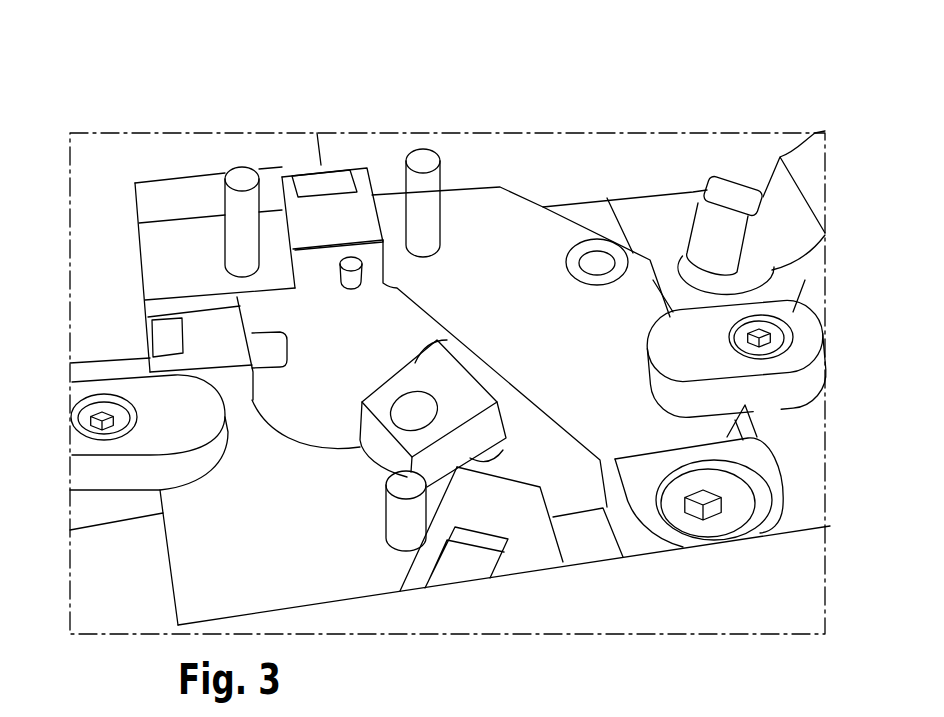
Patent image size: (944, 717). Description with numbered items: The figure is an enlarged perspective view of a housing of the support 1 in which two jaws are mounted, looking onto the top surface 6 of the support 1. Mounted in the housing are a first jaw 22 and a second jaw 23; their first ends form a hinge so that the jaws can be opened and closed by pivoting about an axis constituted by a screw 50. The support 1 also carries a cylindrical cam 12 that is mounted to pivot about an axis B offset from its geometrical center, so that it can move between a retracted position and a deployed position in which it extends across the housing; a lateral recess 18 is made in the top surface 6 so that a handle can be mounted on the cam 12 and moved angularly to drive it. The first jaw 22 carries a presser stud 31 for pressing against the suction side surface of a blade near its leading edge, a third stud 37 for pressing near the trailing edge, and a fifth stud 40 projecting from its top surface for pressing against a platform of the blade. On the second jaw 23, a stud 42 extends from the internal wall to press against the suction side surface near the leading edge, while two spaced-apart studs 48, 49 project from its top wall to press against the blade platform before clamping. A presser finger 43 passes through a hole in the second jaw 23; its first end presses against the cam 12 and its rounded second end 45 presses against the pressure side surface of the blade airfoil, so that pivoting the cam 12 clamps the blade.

The support 1 is at (628, 603).
The top surface 6 is at (95, 260).
The cam 12 is at (777, 267).
The lateral recess 18 is at (532, 172).
The first jaw 22 is at (293, 568).
The second jaw 23 is at (483, 225).
The presser stud 31 is at (272, 347).
The third stud 37 is at (510, 472).
The fifth stud 40 is at (407, 518).
The stud 42 is at (348, 267).
The presser finger 43 is at (457, 397).
The second end 45 is at (362, 452).
The stud 48 is at (423, 155).
The stud 49 is at (242, 177).
The screw 50 is at (728, 518).
The axis B is at (732, 193).